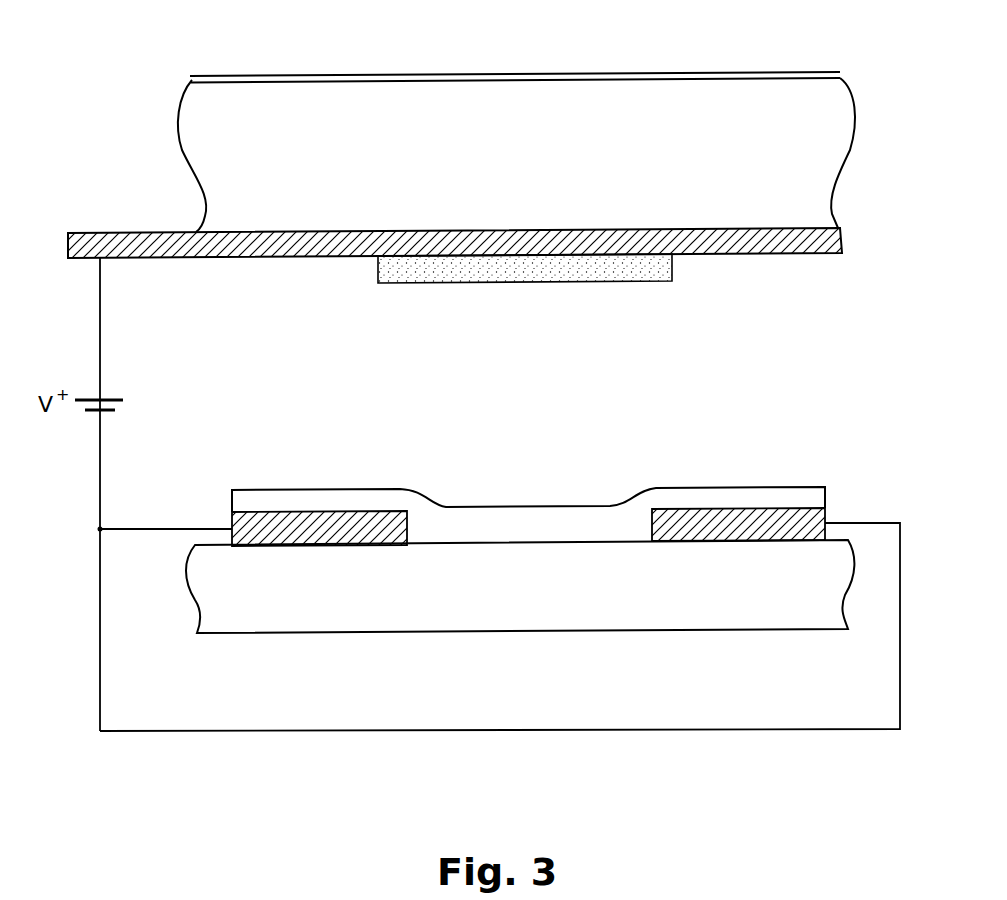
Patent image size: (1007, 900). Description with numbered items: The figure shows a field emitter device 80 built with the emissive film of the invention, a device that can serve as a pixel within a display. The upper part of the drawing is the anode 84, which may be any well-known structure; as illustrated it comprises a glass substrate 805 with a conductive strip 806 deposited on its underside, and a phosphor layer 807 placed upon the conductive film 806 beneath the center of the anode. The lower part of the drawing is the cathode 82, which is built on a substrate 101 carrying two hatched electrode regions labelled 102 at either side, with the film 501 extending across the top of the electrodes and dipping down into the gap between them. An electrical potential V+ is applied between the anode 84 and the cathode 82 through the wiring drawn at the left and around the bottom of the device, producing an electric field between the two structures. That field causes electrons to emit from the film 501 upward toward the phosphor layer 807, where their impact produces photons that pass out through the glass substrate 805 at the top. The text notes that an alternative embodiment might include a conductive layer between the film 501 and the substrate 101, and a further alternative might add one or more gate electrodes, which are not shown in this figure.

The field emitter device 80 is at (535, 548).
The cathode 82 is at (325, 637).
The anode 84 is at (740, 68).
The substrate 101 is at (503, 633).
The sample holder 102 is at (266, 511).
The film 501 is at (493, 507).
The glass substrate 805 is at (575, 73).
The conductive strip 806 is at (828, 257).
The phosphor layer 807 is at (663, 283).